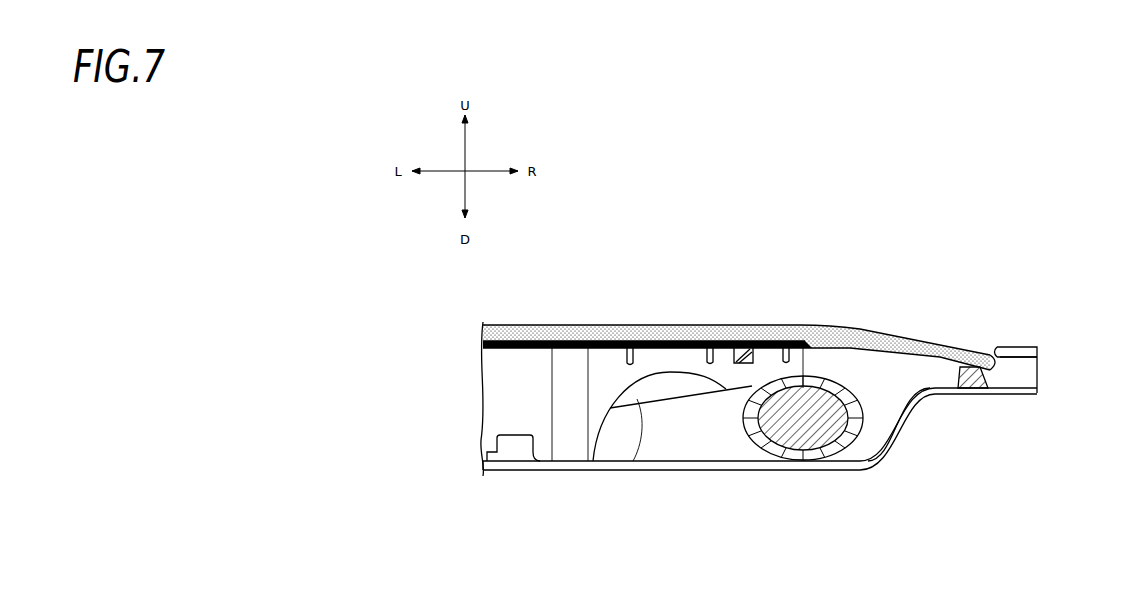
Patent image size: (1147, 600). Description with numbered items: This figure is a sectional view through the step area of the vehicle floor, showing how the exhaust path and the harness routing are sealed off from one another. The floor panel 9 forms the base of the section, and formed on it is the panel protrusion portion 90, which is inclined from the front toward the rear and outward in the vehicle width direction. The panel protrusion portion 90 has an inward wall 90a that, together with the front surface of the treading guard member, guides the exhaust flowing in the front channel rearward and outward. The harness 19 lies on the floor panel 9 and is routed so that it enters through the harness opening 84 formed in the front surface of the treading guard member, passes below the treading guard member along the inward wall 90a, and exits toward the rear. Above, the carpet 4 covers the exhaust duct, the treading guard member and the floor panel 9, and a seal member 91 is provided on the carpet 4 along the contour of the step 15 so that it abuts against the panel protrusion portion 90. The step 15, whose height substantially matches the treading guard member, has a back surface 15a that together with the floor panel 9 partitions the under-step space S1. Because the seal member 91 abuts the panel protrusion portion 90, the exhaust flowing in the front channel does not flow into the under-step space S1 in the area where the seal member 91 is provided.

The carpet 4 is at (664, 325).
The floor panel 9 is at (556, 471).
The harness opening 84 is at (632, 471).
The harness 19 is at (684, 437).
The panel protrusion portion 90 is at (931, 388).
The inward wall 90a is at (880, 428).
The seal member 91 is at (970, 392).
The step 15 is at (1035, 345).
The back surface of the step 15a is at (1038, 358).
The under-step space S1 is at (1040, 375).